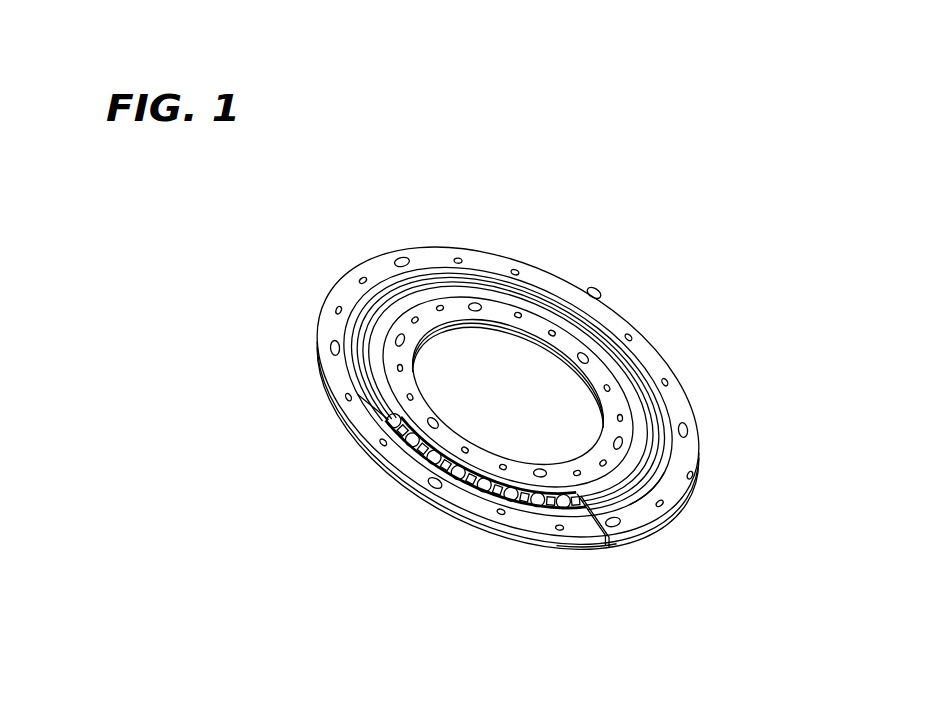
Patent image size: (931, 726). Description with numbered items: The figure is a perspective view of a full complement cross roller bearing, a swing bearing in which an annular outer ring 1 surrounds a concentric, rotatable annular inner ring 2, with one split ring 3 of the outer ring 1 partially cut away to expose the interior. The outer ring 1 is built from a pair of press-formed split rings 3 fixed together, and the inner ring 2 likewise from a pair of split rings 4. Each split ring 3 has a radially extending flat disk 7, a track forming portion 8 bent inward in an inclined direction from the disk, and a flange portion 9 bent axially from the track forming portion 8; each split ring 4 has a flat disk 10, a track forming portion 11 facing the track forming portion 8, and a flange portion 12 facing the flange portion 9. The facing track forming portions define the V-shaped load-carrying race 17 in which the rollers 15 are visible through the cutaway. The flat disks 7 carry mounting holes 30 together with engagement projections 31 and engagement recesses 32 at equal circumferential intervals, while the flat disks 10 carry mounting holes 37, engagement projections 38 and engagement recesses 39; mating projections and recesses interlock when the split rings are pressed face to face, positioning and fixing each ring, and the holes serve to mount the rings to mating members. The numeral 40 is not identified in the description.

The outer ring 1 is at (652, 360).
The inner ring 2 is at (567, 350).
The split ring 3 is at (525, 522).
The split ring 4 is at (430, 465).
The flat disk 7 is at (365, 422).
The track forming portion 8 is at (652, 482).
The flange portion 9 is at (668, 417).
The flat disk 10 is at (637, 520).
The track forming portion 11 is at (440, 285).
The flange portion 12 is at (656, 405).
The roller 15 is at (510, 500).
The load-carrying race 17 is at (398, 428).
The mounting hole 30 is at (404, 258).
The engagement projection 31 is at (362, 280).
The engagement recess 32 is at (338, 310).
The mounting hole 37 is at (475, 304).
The engagement projection 38 is at (553, 333).
The engagement recess 39 is at (514, 316).
The segment joint 40 is at (607, 537).